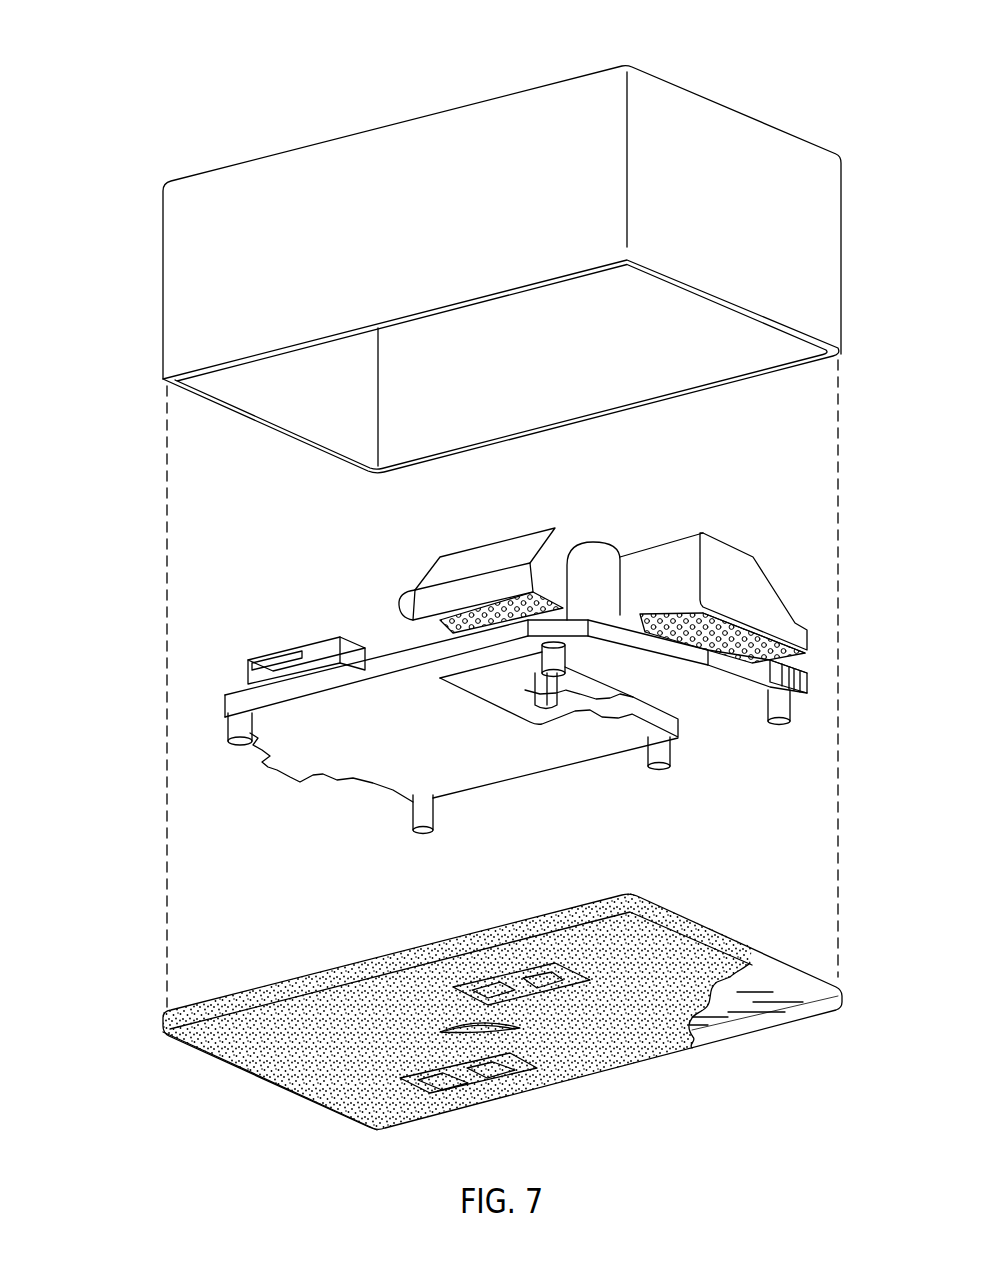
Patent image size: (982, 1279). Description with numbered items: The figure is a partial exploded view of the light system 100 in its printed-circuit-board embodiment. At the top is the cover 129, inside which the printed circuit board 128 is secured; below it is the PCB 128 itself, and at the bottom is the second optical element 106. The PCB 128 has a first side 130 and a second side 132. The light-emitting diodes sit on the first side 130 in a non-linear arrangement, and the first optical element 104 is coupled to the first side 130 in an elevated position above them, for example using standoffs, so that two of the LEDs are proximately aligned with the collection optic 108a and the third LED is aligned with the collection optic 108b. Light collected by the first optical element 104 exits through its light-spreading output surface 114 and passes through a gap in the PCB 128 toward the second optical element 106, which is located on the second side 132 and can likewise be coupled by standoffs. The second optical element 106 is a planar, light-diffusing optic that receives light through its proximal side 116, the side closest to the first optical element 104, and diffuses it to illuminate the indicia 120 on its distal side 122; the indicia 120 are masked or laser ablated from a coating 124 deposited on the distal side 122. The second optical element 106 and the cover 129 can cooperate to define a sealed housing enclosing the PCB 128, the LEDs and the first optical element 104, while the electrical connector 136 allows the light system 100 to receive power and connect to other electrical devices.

The light system 100 is at (166, 56).
The first optical element 104 is at (745, 591).
The second optical element 106 is at (747, 1002).
The collection optic 108a is at (400, 615).
The collection optic 108b is at (670, 610).
The output surface 114 is at (780, 642).
The proximal side 116 is at (267, 980).
The indicia 120 is at (570, 978).
The distal side 122 is at (243, 1073).
The coating 124 is at (652, 1037).
The printed circuit board 128 is at (225, 708).
The cover 129 is at (767, 121).
The first side 130 is at (243, 685).
The second side 132 is at (320, 753).
The electrical connector 136 is at (333, 637).